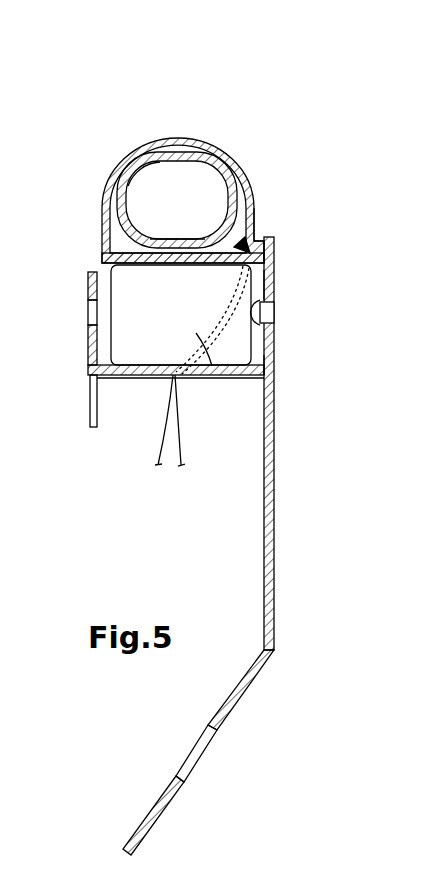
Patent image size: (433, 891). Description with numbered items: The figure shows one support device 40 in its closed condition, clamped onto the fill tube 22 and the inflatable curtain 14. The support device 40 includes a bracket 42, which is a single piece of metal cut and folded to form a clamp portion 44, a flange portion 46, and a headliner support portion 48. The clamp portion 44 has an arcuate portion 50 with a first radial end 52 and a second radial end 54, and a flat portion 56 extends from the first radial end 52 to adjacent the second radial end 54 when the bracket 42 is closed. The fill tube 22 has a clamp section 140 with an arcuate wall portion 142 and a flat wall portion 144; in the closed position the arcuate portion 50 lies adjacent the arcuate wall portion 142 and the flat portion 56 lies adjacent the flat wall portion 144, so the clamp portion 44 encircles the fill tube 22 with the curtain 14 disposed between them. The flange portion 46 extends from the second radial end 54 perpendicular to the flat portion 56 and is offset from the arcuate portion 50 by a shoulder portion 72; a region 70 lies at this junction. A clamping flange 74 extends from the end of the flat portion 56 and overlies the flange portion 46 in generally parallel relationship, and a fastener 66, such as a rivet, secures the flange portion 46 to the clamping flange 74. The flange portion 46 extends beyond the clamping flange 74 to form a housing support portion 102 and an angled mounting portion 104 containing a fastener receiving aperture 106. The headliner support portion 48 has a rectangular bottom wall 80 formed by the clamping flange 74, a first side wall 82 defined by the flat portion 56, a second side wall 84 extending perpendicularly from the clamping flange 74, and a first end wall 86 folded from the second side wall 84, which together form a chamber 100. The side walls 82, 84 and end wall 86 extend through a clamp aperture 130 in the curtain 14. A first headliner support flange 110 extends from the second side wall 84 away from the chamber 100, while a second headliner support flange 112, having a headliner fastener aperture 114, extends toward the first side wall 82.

The support device 40 is at (88, 118).
The bracket 42 is at (105, 88).
The clamp portion 44 is at (223, 123).
The flange portion 46 is at (282, 460).
The headliner support portion 48 is at (76, 358).
The arcuate portion 50 is at (137, 150).
The inflatable curtain 14 is at (104, 213).
The first radial end 52 is at (102, 248).
The second radial end 54 is at (257, 222).
The flat portion 56 is at (147, 266).
The fastener 66 is at (270, 313).
The flange 70 is at (274, 262).
The shoulder portion 72 is at (273, 240).
The clamping flange 74 is at (302, 285).
The bottom wall 80 is at (272, 290).
The first side wall 82 is at (192, 265).
The second side wall 84 is at (133, 378).
The first end wall 86 is at (265, 367).
The chamber 100 is at (125, 281).
The housing support portion 102 is at (272, 600).
The angled mounting portion 104 is at (216, 731).
The fastener receiving aperture 106 is at (186, 772).
The first headliner support flange 110 is at (93, 392).
The second headliner support flange 112 is at (90, 345).
The headliner fastener aperture 114 is at (90, 310).
The clamp aperture 130 is at (217, 376).
The clamp section 140 is at (244, 178).
The arcuate wall portion 142 is at (148, 188).
The flat wall portion 144 is at (165, 238).
The fill tube 22 is at (170, 170).